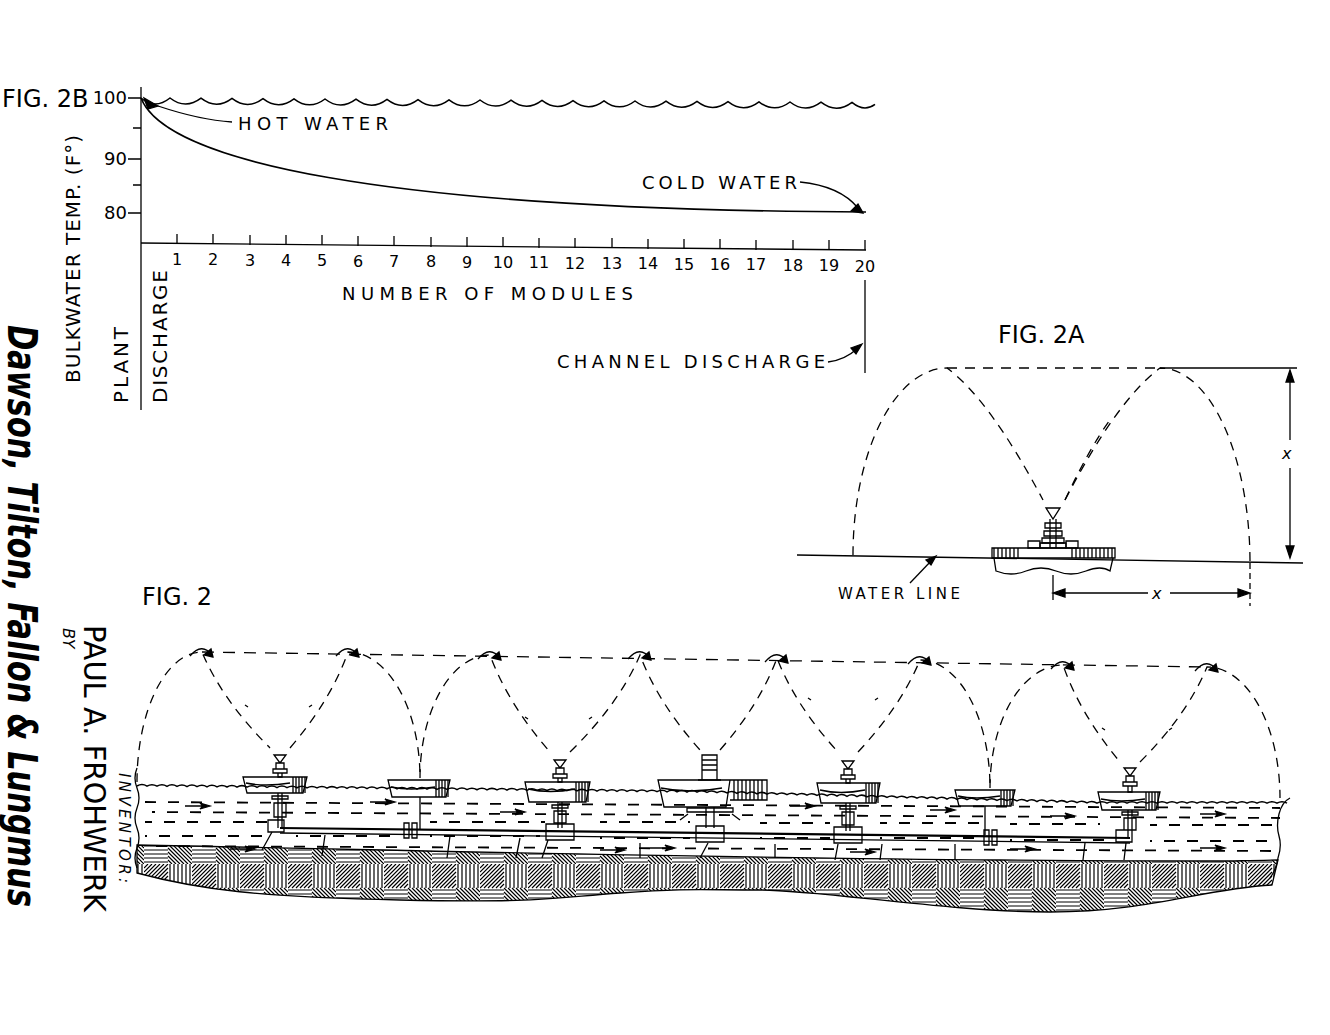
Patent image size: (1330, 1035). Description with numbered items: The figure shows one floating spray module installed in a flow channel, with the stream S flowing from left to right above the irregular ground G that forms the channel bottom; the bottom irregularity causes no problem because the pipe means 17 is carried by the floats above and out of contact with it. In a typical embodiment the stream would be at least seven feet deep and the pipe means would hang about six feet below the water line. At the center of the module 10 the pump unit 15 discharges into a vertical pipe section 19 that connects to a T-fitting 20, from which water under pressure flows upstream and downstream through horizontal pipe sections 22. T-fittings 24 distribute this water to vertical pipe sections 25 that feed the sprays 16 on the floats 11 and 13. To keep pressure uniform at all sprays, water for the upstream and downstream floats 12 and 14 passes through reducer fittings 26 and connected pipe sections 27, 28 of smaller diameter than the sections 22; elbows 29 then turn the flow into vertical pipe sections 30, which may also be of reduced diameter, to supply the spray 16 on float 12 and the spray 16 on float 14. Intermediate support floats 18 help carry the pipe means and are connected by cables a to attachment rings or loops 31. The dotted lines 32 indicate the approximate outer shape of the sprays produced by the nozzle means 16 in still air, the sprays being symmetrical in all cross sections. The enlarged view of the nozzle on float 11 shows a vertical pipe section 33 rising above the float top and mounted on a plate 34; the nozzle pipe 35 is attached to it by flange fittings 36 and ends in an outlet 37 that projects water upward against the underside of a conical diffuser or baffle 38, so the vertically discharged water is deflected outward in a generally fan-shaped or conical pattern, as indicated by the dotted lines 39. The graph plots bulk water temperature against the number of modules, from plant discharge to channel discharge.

In FIG. 2, the floating pump module 10 is at (745, 790).
In FIG. 2A, the float 11 is at (1117, 552).
In FIG. 2, the float 11 is at (582, 787).
In FIG. 2, the upstream float 12 is at (305, 781).
In FIG. 2, the float 13 is at (872, 788).
In FIG. 2, the downstream float 14 is at (1152, 796).
In FIG. 2, the pump unit 15 is at (719, 762).
In FIG. 2A, the spray (nozzle means) 16 is at (1064, 529).
In FIG. 2, the spray (nozzle means) 16 is at (288, 764).
In FIG. 2, the pipe means 17 is at (1037, 834).
In FIG. 2, the intermediate support float 18 is at (442, 783).
In FIG. 2, the vertical pipe section 19 is at (666, 816).
In FIG. 2, the T-fitting 20 is at (700, 860).
In FIG. 2, the horizontal pipe section 22 is at (640, 860).
In FIG. 2, the T-fitting 24 is at (545, 860).
In FIG. 2, the vertical pipe section 25 is at (542, 829).
In FIG. 2, the reducer fitting 26 is at (520, 840).
In FIG. 2, the pipe section 27 is at (450, 838).
In FIG. 2, the pipe section 28 is at (326, 838).
In FIG. 2, the elbow 29 is at (264, 848).
In FIG. 2, the vertical pipe section 30 is at (272, 810).
In FIG. 2, the attachment ring or loop 31 is at (424, 829).
In FIG. 2A, the dotted lines (spray outer shape) 32 is at (880, 437).
In FIG. 2, the dotted lines (spray outer shape) 32 is at (360, 658).
In FIG. 2A, the vertical pipe section 33 is at (1066, 542).
In FIG. 2A, the plate 34 is at (1040, 545).
In FIG. 2A, the nozzle pipe 35 is at (1038, 540).
In FIG. 2A, the flange fitting 36 is at (1044, 534).
In FIG. 2A, the outlet 37 is at (1061, 524).
In FIG. 2A, the conical diffuser or baffle 38 is at (1053, 506).
In FIG. 2A, the dotted lines (spray pattern) 39 is at (1104, 432).
In FIG. 2, the dotted lines (spray pattern) 39 is at (312, 705).
In FIG. 2, the cable a is at (688, 816).
In FIG. 2, the stream S is at (1250, 805).
In FIG. 2, the ground G is at (1222, 889).